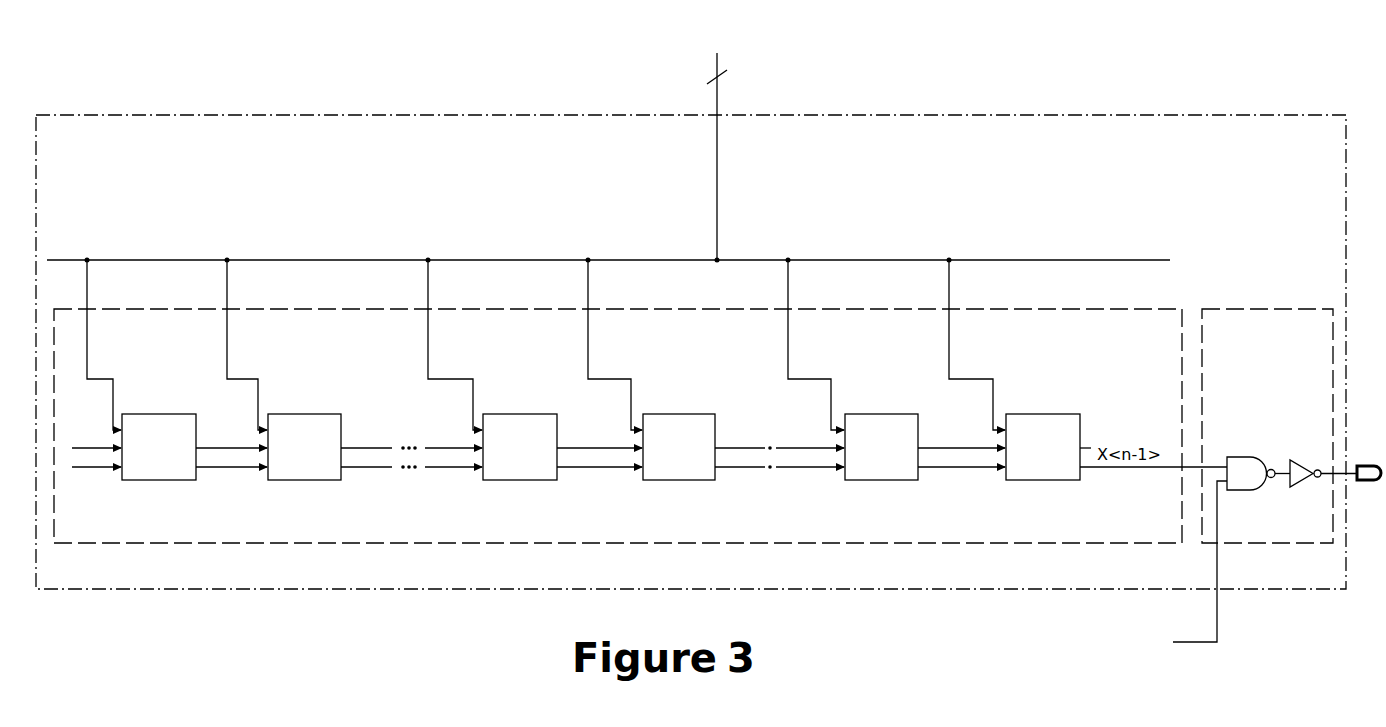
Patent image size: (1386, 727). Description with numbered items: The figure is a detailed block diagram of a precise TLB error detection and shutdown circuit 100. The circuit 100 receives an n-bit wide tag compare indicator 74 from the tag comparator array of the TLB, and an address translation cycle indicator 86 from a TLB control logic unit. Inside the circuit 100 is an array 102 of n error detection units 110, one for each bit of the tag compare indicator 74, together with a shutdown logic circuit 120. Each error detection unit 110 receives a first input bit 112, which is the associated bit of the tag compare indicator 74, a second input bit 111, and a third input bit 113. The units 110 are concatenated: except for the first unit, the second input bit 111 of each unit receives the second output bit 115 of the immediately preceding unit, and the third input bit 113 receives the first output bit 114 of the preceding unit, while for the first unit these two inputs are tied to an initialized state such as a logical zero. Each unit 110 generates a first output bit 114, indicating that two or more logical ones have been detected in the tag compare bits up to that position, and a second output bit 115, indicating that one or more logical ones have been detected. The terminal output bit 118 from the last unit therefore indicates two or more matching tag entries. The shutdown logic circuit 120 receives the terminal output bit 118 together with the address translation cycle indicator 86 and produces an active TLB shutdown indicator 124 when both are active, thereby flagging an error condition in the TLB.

The n-bit wide tag compare indicator 74 is at (608, 145).
The TLB error detection and shutdown circuit 100 is at (691, 341).
The array 102 is at (618, 413).
The shutdown logic circuit 120 is at (1279, 412).
The error detection unit 110 is at (579, 370).
The second input bit 111 is at (599, 428).
The first input bit 112 is at (618, 345).
The third input bit 113 is at (599, 474).
The first output bit 114 is at (740, 484).
The second output bit 115 is at (740, 428).
The terminal output bit 118 is at (1100, 431).
The address translation cycle indicator 86 is at (1200, 561).
The TLB shutdown indicator 124 is at (1363, 461).